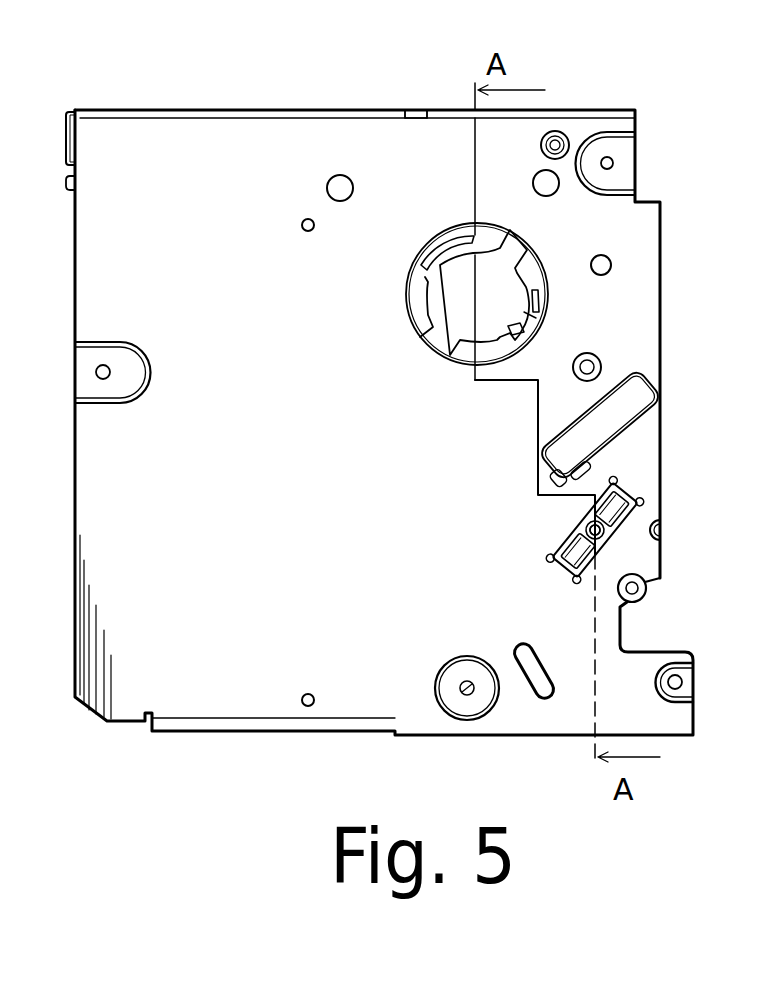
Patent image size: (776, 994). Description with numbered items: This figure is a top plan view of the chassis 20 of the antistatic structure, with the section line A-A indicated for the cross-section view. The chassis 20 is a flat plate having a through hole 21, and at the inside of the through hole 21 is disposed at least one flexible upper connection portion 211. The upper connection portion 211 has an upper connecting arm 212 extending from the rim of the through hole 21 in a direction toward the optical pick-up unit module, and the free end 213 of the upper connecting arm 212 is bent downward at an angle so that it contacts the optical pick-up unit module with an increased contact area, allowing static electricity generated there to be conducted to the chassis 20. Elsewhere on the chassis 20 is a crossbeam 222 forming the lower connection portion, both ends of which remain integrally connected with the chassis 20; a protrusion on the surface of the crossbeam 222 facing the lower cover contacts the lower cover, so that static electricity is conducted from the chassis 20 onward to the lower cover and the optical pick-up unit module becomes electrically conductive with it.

The chassis 20 is at (402, 105).
The through hole 21 is at (477, 294).
The upper connection portion 211 is at (537, 303).
The upper connecting arm 212 is at (508, 331).
The free end 213 is at (533, 311).
The crossbeam 222 is at (640, 529).